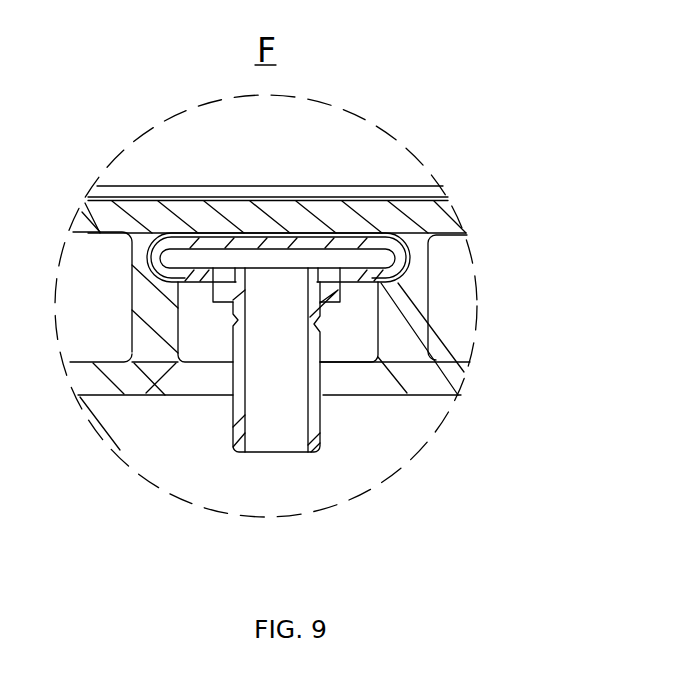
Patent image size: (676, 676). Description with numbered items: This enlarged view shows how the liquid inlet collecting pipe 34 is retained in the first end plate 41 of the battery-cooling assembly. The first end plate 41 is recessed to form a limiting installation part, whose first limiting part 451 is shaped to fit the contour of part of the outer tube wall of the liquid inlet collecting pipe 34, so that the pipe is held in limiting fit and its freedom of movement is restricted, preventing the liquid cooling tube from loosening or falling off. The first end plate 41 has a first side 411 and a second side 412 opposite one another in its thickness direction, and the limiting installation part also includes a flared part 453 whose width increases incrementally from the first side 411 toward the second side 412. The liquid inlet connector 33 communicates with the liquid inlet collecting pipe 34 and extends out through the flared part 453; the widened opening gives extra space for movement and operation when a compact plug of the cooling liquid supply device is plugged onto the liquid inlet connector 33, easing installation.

The liquid inlet connector 33 is at (233, 417).
The liquid inlet collecting pipe 34 is at (458, 397).
The first end plate 41 is at (203, 382).
The first side 411 is at (348, 355).
The second side 412 is at (353, 397).
The first limiting part 451 is at (430, 246).
The flared part 453 is at (168, 395).